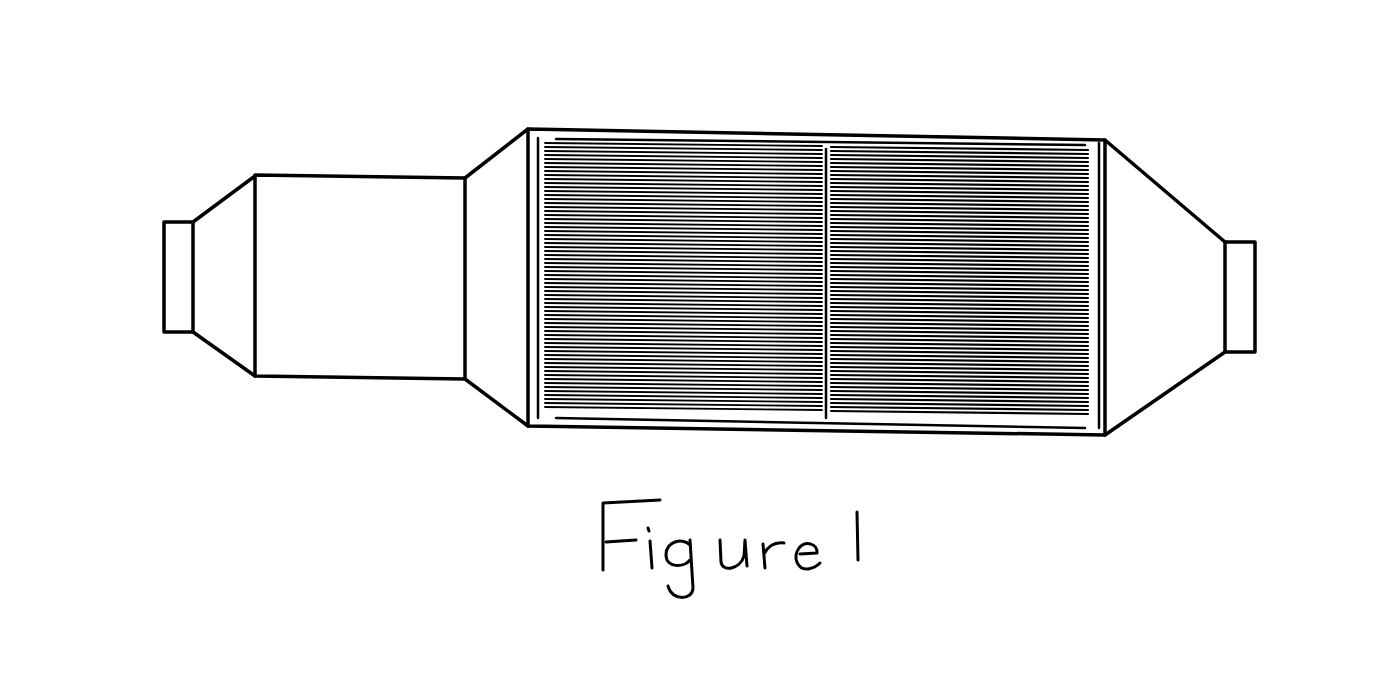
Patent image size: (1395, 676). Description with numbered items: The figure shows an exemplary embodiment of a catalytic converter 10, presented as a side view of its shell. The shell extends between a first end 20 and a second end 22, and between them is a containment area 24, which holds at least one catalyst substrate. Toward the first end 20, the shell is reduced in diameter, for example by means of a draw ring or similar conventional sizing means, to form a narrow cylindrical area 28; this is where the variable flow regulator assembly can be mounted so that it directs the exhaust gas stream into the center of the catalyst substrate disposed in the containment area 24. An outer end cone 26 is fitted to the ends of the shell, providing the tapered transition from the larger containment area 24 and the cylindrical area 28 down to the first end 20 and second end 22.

The catalytic converter 10 is at (182, 157).
The first end 20 is at (160, 340).
The second end 22 is at (1246, 228).
The containment area 24 is at (528, 120).
The outer end cone 26 is at (237, 362).
The narrow cylindrical area 28 is at (511, 131).